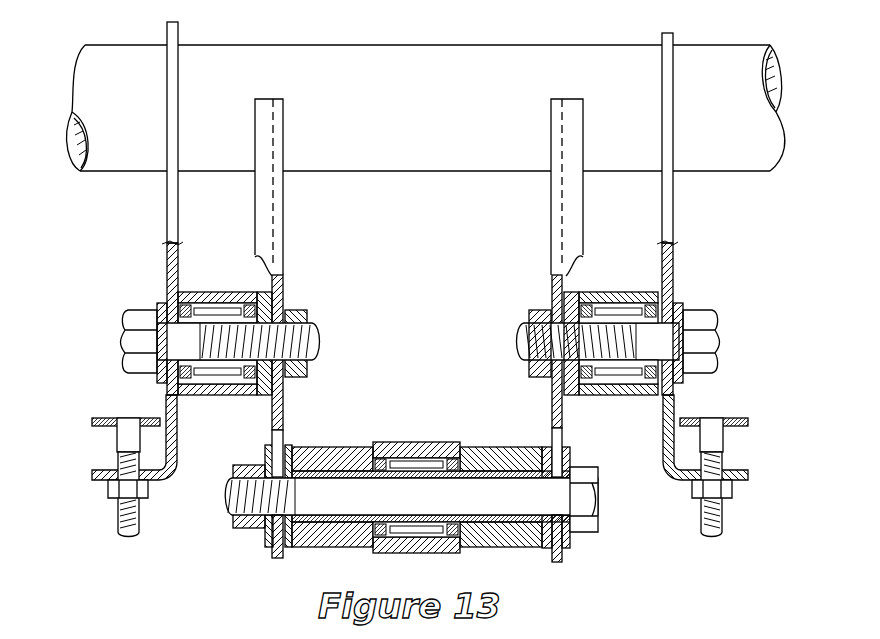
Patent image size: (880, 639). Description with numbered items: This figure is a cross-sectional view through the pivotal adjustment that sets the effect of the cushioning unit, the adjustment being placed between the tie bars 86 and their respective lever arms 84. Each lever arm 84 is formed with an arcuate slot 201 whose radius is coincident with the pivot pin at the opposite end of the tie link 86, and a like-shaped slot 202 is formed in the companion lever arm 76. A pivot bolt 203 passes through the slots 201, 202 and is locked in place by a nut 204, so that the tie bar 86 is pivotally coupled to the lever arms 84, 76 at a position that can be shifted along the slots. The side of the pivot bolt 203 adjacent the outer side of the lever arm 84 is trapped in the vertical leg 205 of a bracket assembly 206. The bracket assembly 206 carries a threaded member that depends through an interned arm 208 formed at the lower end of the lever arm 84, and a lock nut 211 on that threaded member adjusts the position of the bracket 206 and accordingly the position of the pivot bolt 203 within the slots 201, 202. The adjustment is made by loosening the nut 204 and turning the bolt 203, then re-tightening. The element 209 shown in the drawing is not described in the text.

The lever arm 84 is at (167, 211).
The lever arm 76 is at (283, 232).
The tie bar 86 is at (217, 396).
The arcuate slot 201 is at (160, 300).
The slot 202 is at (285, 300).
The pivot bolt 203 is at (136, 346).
The nut 204 is at (298, 377).
The vertical leg 205 is at (166, 410).
The bracket assembly 206 is at (99, 423).
The interned arm 208 is at (158, 481).
The nut 209 is at (108, 489).
The lock nut 211 is at (118, 528).